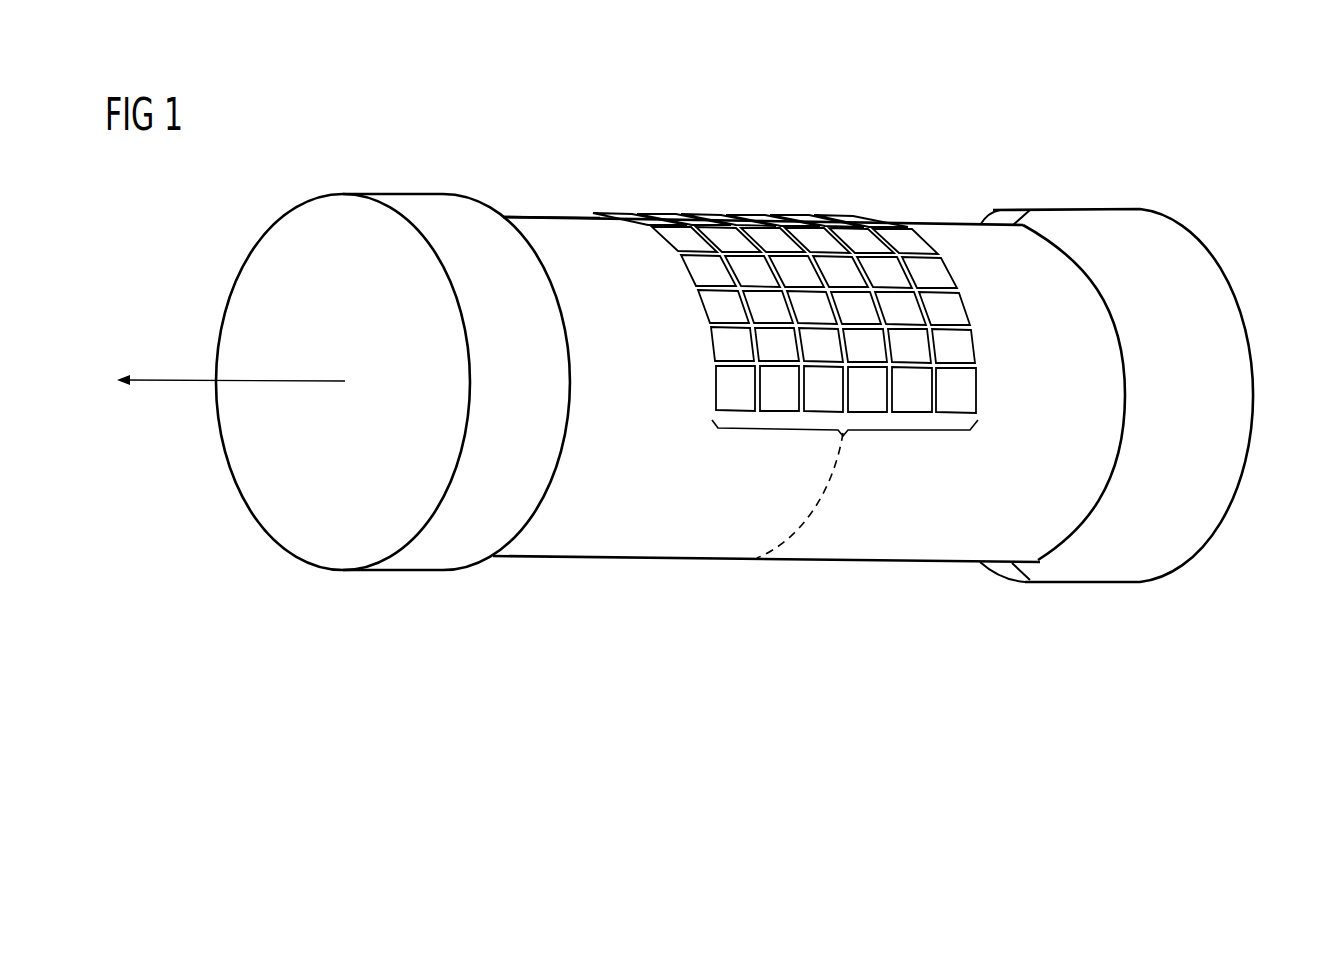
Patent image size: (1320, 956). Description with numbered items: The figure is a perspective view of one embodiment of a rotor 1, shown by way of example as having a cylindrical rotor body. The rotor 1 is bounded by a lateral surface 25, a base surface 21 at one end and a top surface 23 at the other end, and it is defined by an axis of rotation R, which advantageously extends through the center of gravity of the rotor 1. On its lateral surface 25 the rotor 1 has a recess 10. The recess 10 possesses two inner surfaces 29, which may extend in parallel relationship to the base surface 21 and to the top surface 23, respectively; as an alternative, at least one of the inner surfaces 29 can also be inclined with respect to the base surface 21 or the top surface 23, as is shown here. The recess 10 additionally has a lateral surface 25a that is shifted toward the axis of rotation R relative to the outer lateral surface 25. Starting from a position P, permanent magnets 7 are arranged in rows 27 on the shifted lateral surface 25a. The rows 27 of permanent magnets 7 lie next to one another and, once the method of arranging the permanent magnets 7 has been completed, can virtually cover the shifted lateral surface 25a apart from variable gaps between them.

The rotor 1 is at (687, 140).
The permanent magnets 7 is at (963, 346).
The recess 10 is at (668, 560).
The base surface 21 is at (250, 277).
The top surface 23 is at (1213, 248).
The lateral surface 25 is at (422, 207).
The shifted lateral surface 25a is at (547, 230).
The rows 27 is at (845, 437).
The inner surfaces 29 is at (1001, 212).
The position P is at (801, 518).
The axis of rotation R is at (231, 365).